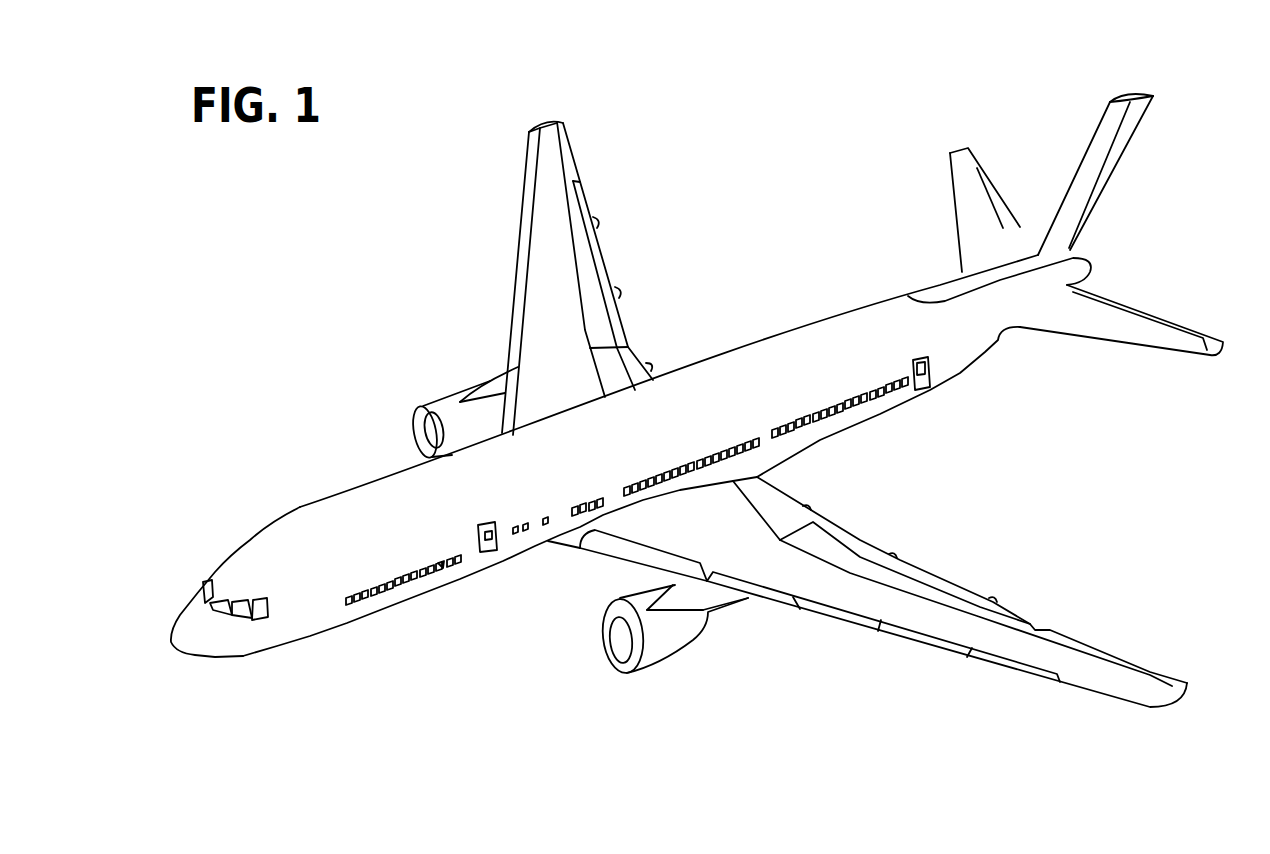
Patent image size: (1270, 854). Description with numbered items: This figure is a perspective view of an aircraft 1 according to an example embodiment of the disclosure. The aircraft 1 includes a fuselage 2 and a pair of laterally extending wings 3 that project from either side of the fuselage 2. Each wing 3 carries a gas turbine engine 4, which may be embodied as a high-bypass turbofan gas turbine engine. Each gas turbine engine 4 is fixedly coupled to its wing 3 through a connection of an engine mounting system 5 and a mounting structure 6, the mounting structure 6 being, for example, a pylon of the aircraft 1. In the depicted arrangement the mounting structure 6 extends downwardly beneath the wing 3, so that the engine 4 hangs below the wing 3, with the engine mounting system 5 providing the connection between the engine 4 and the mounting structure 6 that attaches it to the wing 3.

The aircraft 1 is at (815, 209).
The fuselage 2 is at (265, 552).
The wing 3 is at (555, 216).
The gas turbine engine 4 is at (443, 402).
The engine mounting system 5 is at (708, 600).
The mounting structure 6 is at (490, 390).